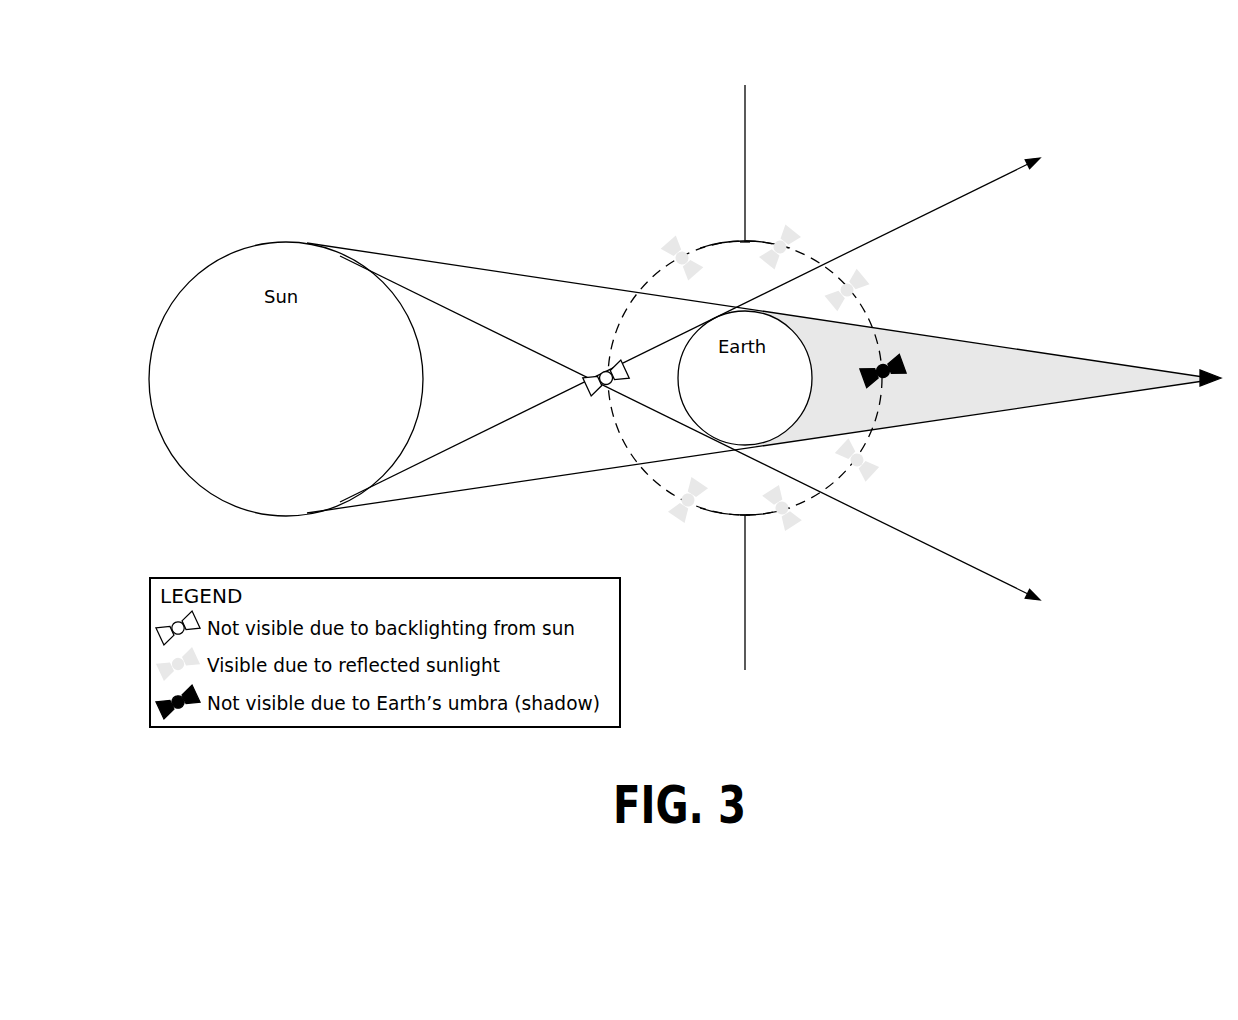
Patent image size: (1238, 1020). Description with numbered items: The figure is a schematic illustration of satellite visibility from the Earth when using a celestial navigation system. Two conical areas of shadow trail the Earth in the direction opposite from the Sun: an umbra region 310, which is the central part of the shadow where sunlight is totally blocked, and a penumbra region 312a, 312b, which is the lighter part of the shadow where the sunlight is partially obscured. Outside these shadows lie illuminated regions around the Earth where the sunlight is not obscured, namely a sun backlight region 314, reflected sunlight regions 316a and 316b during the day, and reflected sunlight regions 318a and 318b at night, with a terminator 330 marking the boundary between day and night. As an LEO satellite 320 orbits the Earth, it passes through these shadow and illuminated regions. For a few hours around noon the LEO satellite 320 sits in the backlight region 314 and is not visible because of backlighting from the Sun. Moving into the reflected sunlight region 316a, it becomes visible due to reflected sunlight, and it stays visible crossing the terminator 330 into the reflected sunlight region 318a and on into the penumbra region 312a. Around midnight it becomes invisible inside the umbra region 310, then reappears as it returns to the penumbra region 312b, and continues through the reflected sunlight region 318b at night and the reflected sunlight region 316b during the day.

The umbra region 310 is at (1024, 410).
The penumbra region 312a is at (918, 244).
The penumbra region 312b is at (989, 540).
The sun backlight region 314 is at (653, 387).
The reflected sunlight region 316a is at (722, 258).
The reflected sunlight region 316b is at (722, 490).
The reflected sunlight region 318a is at (796, 258).
The reflected sunlight region 318b is at (798, 490).
The LEO satellite 320 is at (603, 366).
The terminator 330 is at (747, 102).